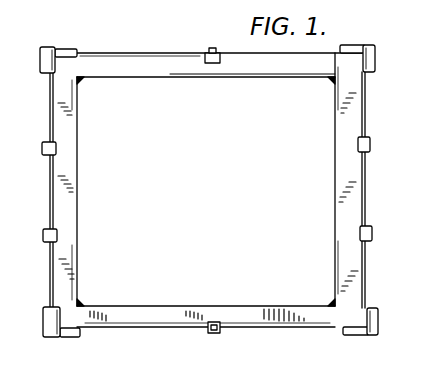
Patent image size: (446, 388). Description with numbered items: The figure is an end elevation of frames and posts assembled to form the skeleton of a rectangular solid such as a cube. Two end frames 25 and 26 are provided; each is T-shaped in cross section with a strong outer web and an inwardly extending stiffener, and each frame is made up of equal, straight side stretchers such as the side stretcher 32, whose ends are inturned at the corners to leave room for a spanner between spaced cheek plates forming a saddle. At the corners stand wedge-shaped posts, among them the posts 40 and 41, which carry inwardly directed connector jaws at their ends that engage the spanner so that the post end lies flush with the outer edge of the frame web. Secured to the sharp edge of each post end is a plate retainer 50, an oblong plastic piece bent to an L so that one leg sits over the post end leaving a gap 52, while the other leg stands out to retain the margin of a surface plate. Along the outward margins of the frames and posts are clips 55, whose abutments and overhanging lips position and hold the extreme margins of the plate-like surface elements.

The end frame 25 is at (133, 68).
The end frame 26 is at (206, 302).
The side stretcher 32 is at (250, 308).
The post 40 is at (352, 162).
The post 41 is at (66, 209).
The plate retainer 50 is at (55, 315).
The gap 52 is at (72, 52).
The clip 55 is at (221, 328).